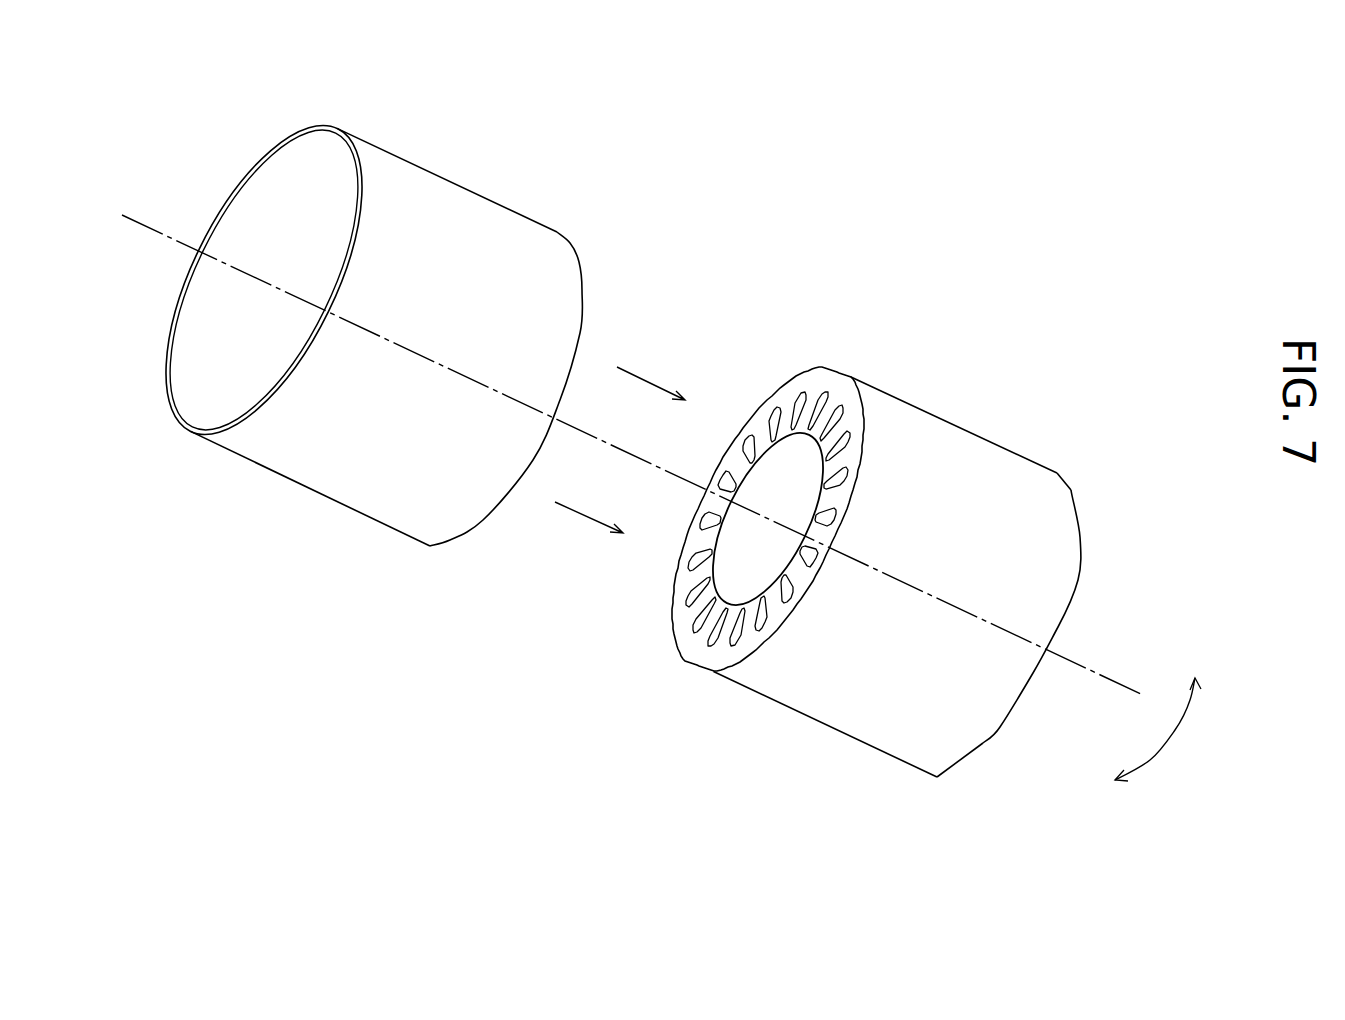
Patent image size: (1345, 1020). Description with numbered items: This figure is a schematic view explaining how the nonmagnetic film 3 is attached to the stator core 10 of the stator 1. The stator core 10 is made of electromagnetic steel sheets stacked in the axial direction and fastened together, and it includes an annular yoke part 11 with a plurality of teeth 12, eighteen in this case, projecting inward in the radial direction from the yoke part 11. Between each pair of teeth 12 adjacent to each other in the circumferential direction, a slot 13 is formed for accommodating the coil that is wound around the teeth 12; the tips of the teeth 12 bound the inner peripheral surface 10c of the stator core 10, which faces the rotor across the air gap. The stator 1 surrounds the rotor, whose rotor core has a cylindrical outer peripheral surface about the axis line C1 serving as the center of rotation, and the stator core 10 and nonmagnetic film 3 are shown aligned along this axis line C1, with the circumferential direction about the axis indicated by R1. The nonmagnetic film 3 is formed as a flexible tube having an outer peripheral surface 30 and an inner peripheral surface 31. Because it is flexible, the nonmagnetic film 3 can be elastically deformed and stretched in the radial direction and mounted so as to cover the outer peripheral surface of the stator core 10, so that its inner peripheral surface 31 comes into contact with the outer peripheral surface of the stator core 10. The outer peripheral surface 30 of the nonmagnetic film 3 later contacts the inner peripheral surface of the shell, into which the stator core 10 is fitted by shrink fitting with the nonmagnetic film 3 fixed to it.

The stator 1 is at (829, 518).
The stator core 10 is at (829, 558).
The inner peripheral surface of stator core 10c is at (793, 455).
The yoke part 11 is at (713, 653).
The teeth 12 is at (714, 519).
The slot 13 is at (693, 560).
The nonmagnetic film 3 is at (354, 315).
The outer peripheral surface 30 is at (385, 167).
The inner peripheral surface 31 is at (280, 177).
The axis line C1 is at (1118, 680).
The circumferential direction R1 is at (1160, 729).